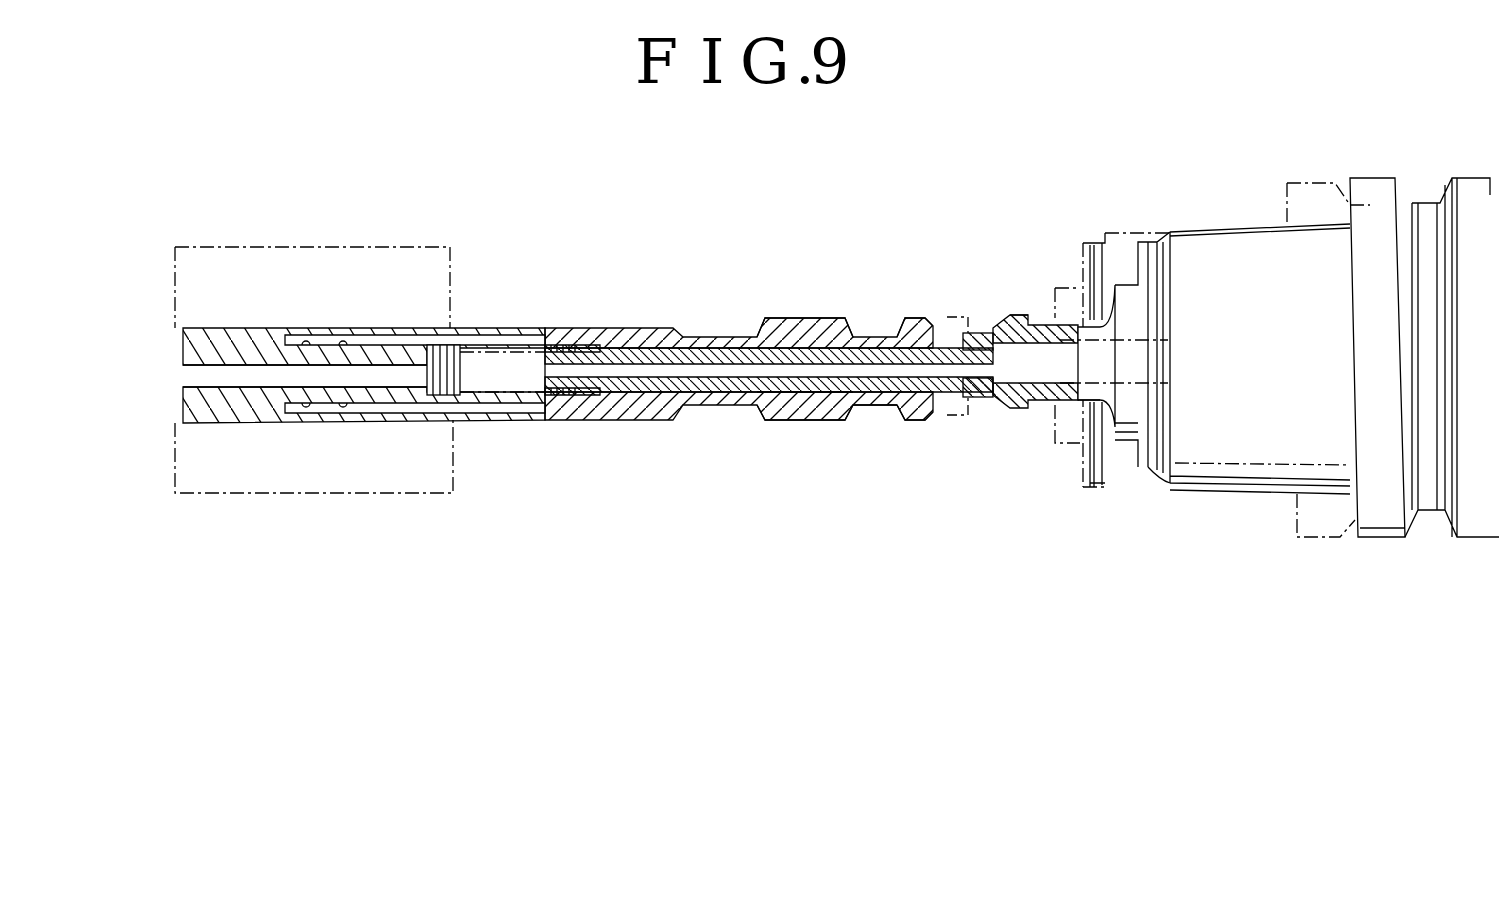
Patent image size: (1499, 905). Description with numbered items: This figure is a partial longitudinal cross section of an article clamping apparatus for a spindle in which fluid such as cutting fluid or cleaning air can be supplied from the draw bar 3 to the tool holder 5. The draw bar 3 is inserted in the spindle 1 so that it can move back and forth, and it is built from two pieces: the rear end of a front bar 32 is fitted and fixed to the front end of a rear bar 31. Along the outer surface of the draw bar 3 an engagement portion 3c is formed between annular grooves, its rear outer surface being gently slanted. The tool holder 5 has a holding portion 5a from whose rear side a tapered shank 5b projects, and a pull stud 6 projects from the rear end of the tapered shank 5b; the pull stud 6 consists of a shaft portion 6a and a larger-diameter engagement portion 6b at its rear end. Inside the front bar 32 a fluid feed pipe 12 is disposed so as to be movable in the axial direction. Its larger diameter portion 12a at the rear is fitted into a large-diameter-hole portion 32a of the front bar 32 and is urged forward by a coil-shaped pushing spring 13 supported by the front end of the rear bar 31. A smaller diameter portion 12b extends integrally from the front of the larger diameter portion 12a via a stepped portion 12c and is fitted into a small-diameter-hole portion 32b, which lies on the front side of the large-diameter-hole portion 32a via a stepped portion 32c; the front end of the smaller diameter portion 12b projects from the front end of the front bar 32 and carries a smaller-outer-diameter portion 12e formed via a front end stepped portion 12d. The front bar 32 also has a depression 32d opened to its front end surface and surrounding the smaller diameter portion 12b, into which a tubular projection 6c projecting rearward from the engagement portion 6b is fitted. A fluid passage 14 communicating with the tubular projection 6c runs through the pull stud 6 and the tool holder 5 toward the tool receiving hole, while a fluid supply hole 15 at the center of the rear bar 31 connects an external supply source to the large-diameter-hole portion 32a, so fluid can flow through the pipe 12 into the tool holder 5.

The spindle 1 is at (370, 494).
The draw bar 3 is at (470, 330).
The engagement portion 3c is at (905, 410).
The tool holder 5 is at (1360, 178).
The holding portion 5a is at (1385, 545).
The tapered shank 5b is at (1225, 425).
The pull stud 6 is at (1040, 322).
The shaft portion 6a is at (1045, 415).
The engagement portion 6b is at (1014, 325).
The tubular projection 6c is at (980, 335).
The fluid feed pipe 12 is at (737, 348).
The larger diameter portion 12a is at (592, 348).
The smaller diameter portion 12b is at (795, 405).
The stepped portion 12c is at (605, 405).
The front end stepped portion 12d is at (975, 395).
The smaller-outer-diameter portion 12e is at (990, 405).
The pushing spring 13 is at (495, 400).
The fluid passage 14 is at (1028, 362).
The fluid supply hole 15 is at (330, 366).
The rear bar 31 is at (268, 423).
The front bar 32 is at (668, 330).
The large-diameter-hole portion 32a is at (510, 352).
The small-diameter-hole portion 32b is at (830, 320).
The stepped portion 32c is at (658, 403).
The depression 32d is at (908, 320).